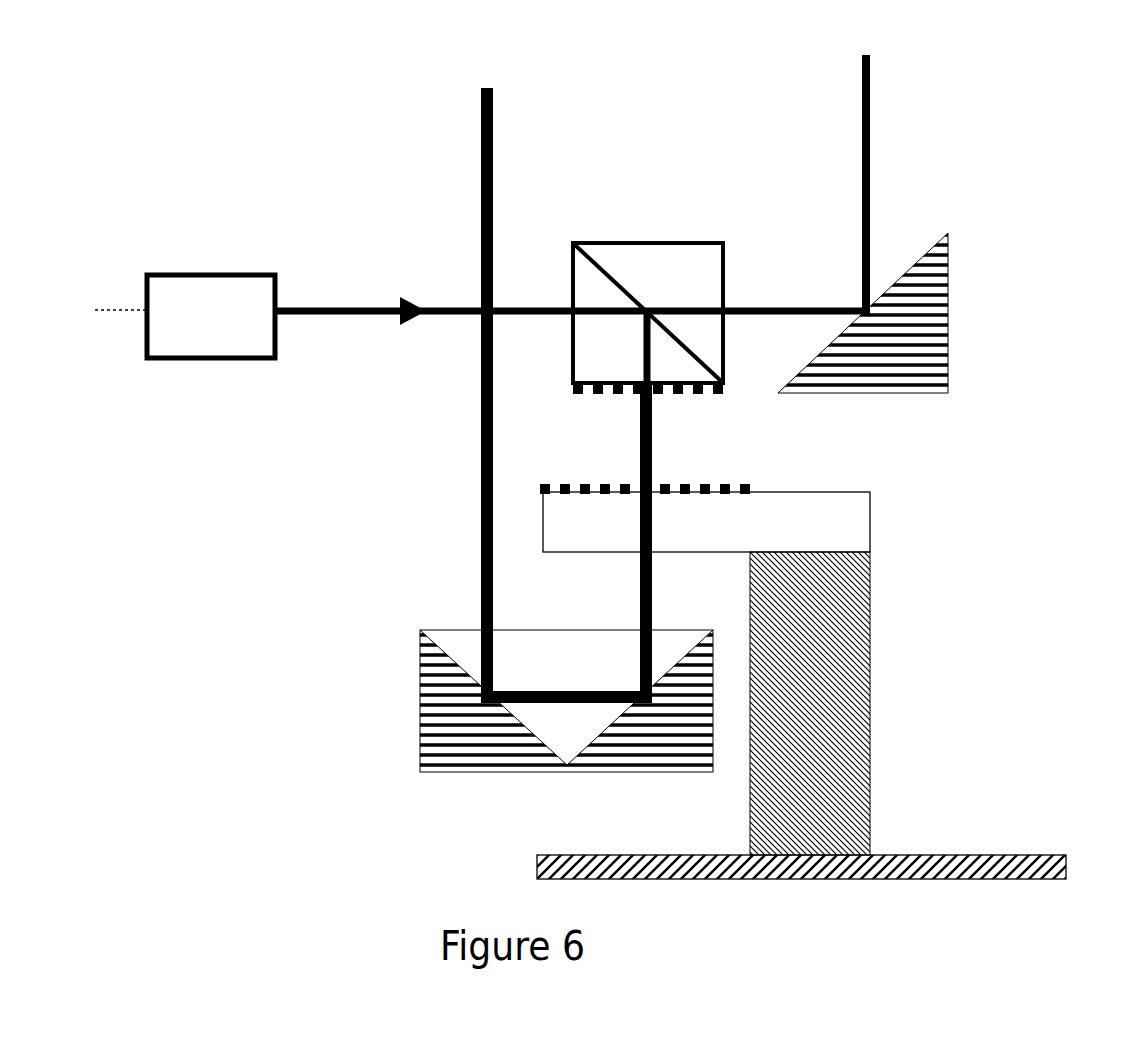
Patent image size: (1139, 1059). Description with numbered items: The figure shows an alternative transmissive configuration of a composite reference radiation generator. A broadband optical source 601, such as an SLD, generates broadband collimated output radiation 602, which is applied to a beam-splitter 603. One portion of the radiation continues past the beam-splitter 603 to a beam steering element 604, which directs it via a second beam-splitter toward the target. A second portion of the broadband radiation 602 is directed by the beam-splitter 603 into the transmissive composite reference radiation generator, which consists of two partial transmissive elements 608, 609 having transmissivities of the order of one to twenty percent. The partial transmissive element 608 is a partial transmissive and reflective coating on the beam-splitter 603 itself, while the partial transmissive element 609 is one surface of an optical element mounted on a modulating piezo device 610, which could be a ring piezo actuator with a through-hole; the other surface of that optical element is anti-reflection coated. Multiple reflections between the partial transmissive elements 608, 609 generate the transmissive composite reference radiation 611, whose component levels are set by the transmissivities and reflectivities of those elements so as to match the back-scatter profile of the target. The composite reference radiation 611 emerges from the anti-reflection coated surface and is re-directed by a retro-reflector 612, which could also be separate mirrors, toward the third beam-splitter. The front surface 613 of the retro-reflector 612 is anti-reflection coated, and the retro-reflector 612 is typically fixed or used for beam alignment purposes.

The broadband optical source 601 is at (202, 362).
The broadband collimated output radiation 602 is at (367, 320).
The beam-splitter 603 is at (647, 227).
The beam steering element 604 is at (962, 285).
The partial transmissive element 608 is at (687, 405).
The partial transmissive element 609 is at (617, 475).
The modulating piezo device 610 is at (883, 685).
The transmissive composite reference radiation 611 is at (637, 600).
The retro-reflector 612 is at (415, 692).
The front surface 613 is at (445, 617).